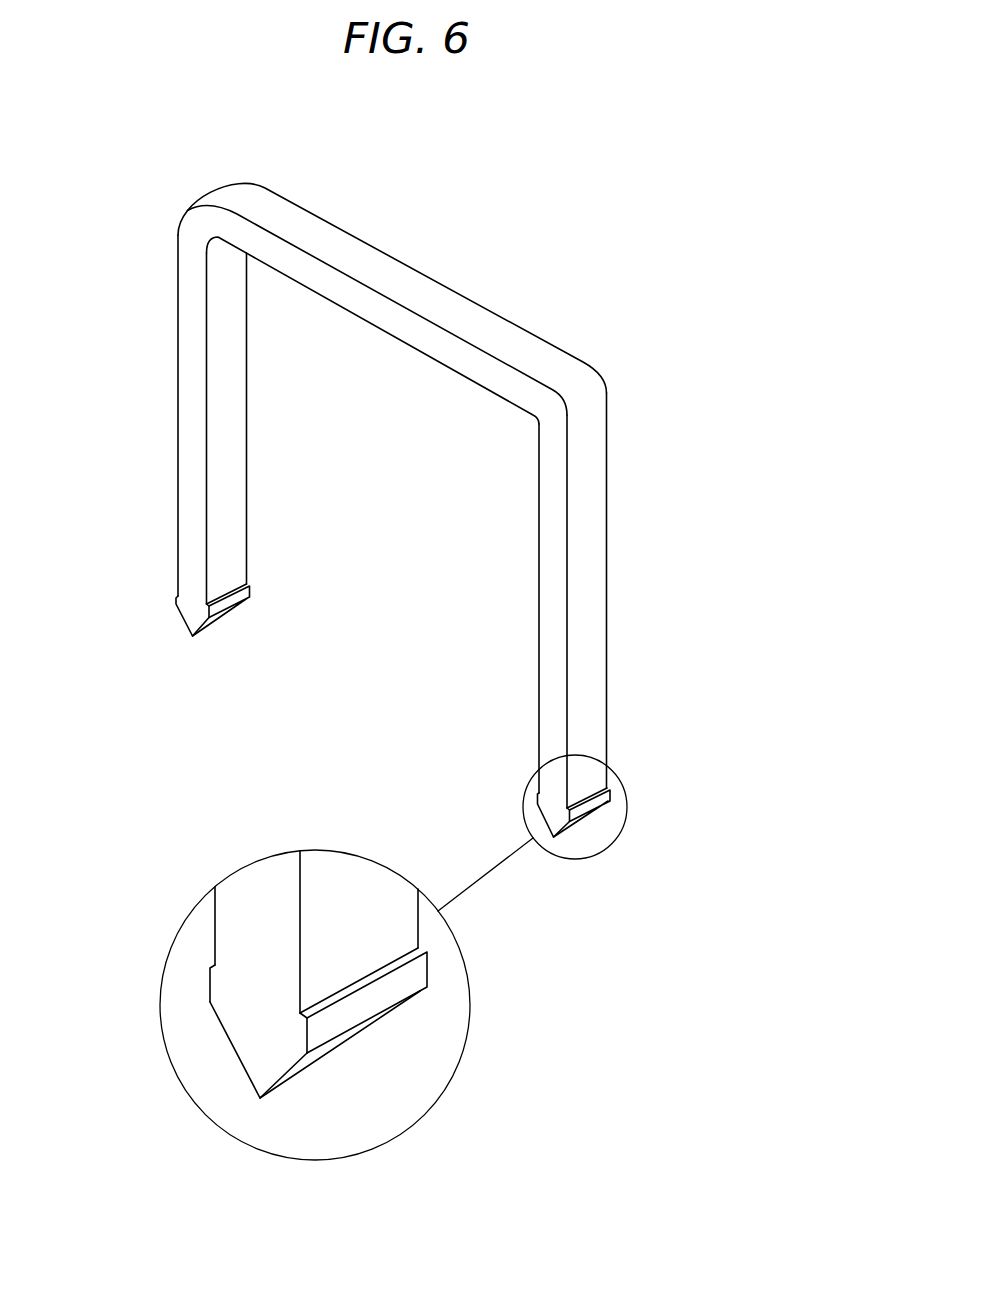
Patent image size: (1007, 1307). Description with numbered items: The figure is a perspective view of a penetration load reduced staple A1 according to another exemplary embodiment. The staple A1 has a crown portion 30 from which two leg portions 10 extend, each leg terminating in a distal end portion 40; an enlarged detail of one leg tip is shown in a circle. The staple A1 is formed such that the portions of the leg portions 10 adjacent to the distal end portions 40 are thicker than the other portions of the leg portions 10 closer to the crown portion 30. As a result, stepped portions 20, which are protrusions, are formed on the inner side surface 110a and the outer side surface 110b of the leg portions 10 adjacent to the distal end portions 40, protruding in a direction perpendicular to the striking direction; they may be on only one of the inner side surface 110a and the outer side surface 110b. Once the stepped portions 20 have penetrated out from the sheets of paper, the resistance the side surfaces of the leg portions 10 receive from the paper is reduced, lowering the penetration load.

The penetration load reduced staple A1 is at (473, 235).
The leg portion 10 is at (178, 422).
The stepped portion 20 is at (176, 597).
The crown portion 30 is at (468, 320).
The distal end portion 40 is at (265, 1050).
The inner side surface 110a is at (232, 468).
The outer side surface 110b is at (602, 693).